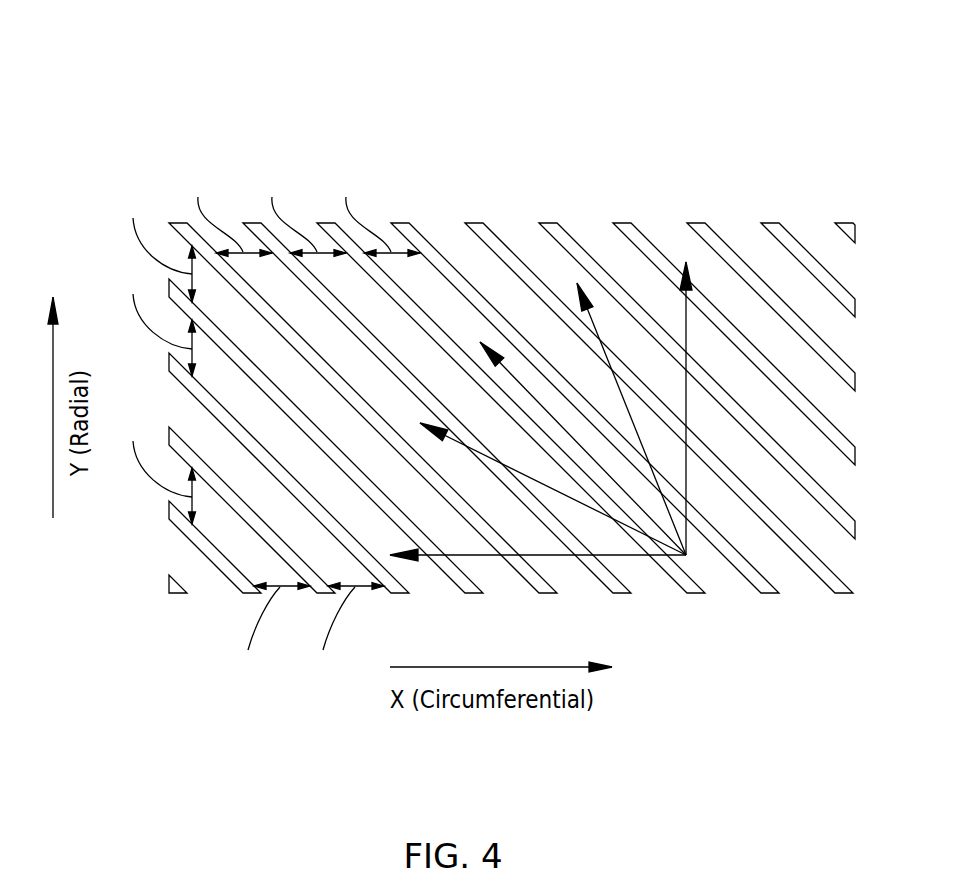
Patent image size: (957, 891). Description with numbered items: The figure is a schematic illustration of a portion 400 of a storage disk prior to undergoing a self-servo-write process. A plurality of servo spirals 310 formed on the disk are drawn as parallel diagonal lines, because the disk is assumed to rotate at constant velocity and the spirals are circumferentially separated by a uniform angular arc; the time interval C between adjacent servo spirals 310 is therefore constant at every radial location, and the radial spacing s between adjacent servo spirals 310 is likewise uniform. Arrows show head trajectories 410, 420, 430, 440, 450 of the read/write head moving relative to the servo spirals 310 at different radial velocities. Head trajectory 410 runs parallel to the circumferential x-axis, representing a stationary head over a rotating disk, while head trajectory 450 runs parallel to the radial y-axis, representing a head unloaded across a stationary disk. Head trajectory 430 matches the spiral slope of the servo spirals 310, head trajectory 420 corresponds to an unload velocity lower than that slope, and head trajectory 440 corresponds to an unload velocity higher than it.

The portion of storage disk 400 is at (490, 361).
The servo spirals 310 is at (620, 594).
The head trajectory 410 is at (477, 557).
The head trajectory 420 is at (436, 438).
The head trajectory 430 is at (492, 370).
The head trajectory 440 is at (577, 298).
The head trajectory 450 is at (685, 298).